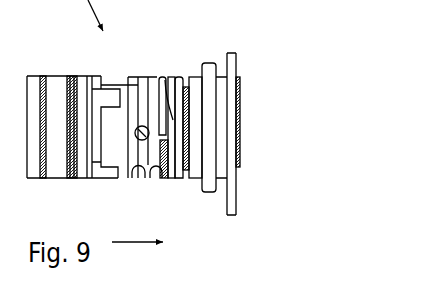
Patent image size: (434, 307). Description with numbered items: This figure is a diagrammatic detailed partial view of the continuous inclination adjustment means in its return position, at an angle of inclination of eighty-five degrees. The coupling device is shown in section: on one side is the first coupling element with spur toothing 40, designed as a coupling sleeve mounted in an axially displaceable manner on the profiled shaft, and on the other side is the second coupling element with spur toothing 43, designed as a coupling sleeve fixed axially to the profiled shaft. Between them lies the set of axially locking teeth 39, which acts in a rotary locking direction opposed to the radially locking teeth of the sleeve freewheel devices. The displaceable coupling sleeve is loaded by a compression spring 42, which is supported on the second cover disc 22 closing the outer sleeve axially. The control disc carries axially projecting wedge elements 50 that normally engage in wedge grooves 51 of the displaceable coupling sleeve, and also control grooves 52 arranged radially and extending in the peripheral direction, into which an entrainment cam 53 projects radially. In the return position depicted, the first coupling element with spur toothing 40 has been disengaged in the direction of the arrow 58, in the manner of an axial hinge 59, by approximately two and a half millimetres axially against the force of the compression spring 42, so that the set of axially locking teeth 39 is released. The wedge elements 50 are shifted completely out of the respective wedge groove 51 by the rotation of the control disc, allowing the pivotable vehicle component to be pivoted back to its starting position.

The second cover disc 22 is at (208, 63).
The set of axially locking teeth 39 is at (73, 75).
The first coupling element with spur toothing 40 is at (117, 160).
The compression spring 42 is at (188, 178).
The second coupling element with spur toothing 43 is at (50, 170).
The axially projecting wedge elements 50 is at (160, 172).
The wedge grooves 51 is at (172, 80).
The control grooves 52 is at (136, 83).
The entrainment cam 53 is at (143, 126).
The arrow 58 is at (133, 242).
The axial hinge 59 is at (161, 64).